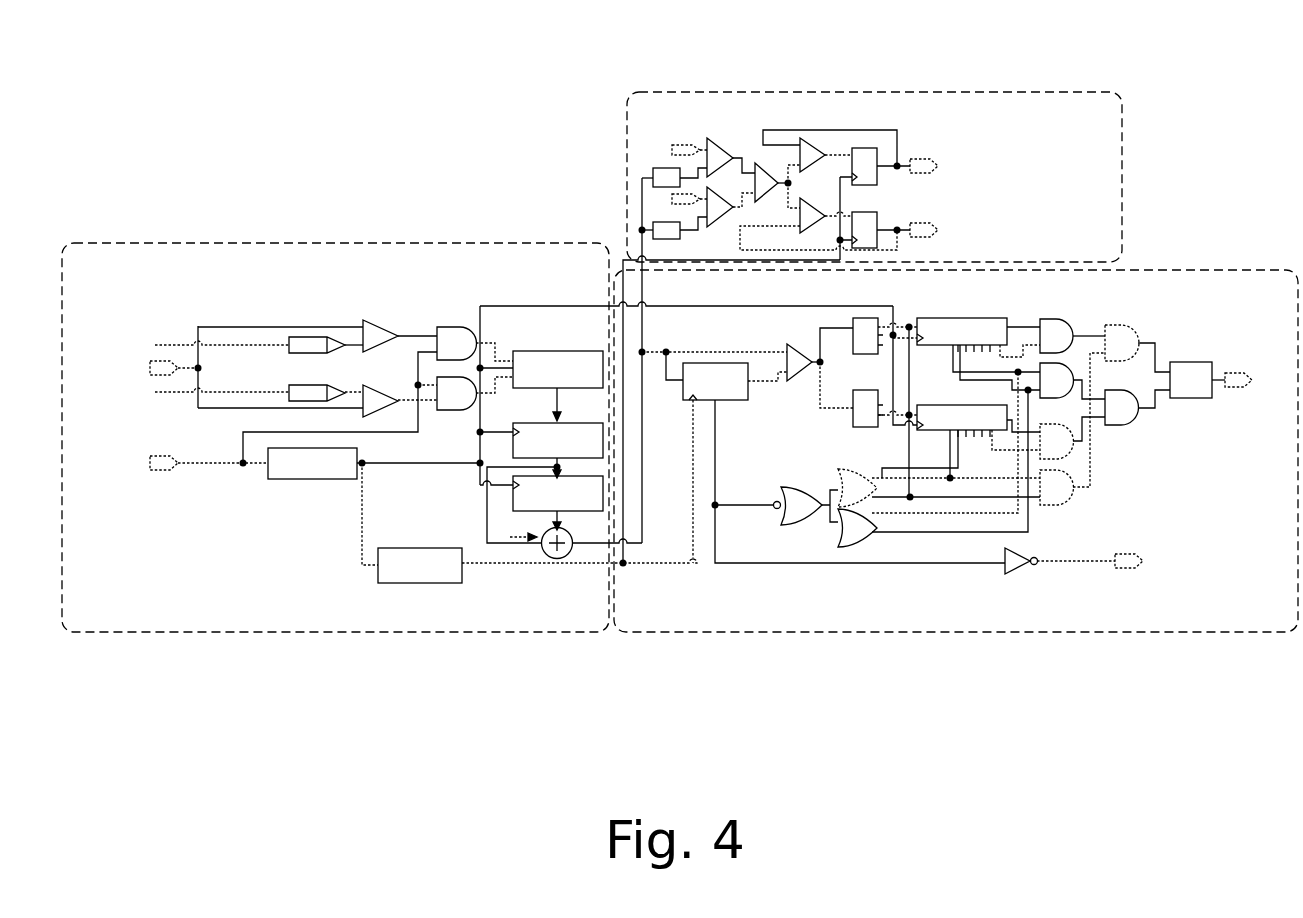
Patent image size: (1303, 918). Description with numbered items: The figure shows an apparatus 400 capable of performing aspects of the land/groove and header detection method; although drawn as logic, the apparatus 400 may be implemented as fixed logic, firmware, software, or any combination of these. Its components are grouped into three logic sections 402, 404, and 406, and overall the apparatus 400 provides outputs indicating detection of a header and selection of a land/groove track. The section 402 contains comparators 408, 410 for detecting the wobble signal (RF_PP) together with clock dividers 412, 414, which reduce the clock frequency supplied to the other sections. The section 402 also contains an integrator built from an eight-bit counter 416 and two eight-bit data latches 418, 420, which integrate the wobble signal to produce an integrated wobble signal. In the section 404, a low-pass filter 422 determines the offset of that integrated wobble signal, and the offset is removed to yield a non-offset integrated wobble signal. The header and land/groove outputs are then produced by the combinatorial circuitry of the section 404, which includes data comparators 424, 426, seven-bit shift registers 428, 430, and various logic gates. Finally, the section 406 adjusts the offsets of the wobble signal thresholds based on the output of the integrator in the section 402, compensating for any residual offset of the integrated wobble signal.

The apparatus 400 is at (169, 52).
The logic section 402 is at (150, 243).
The logic section 404 is at (1195, 270).
The logic section 406 is at (700, 92).
The comparator 408 is at (368, 322).
The comparator 410 is at (375, 416).
The clock divider 412 is at (276, 479).
The clock divider 414 is at (381, 583).
The 8-bit counter 416 is at (582, 352).
The 8-bit data latch 418 is at (551, 423).
The 8-bit data latch 420 is at (513, 501).
The low-pass filter 422 is at (700, 400).
The data comparator 424 is at (853, 340).
The data comparator 426 is at (873, 392).
The 7-bit shift register 428 is at (962, 335).
The 7-bit shift register 430 is at (962, 421).